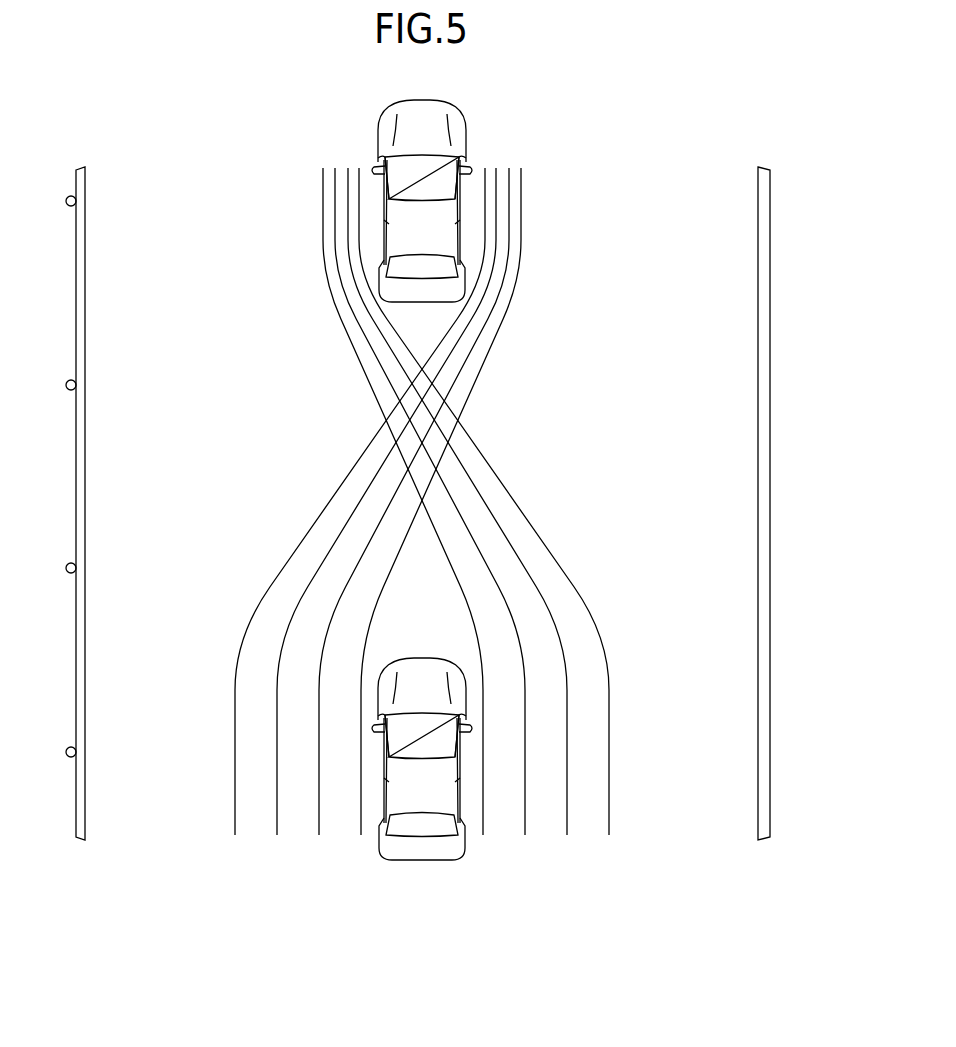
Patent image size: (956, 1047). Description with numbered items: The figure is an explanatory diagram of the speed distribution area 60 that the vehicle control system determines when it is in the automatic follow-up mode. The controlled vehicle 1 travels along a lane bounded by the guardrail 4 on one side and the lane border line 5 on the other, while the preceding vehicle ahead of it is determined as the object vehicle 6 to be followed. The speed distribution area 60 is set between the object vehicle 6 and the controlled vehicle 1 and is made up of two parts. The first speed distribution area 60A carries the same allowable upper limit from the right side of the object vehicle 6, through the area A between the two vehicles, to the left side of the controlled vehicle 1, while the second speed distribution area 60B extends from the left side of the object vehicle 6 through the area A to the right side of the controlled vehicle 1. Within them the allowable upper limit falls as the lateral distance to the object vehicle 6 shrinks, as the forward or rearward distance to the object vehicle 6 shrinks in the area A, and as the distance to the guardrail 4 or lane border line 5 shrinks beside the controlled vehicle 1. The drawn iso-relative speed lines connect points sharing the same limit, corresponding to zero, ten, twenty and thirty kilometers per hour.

The controlled vehicle 1 is at (422, 860).
The guardrail 4 is at (76, 318).
The lane border line 5 is at (770, 400).
The object vehicle 6 is at (422, 300).
The speed distribution area 60 is at (428, 528).
The first speed distribution area 60A is at (363, 528).
The second speed distribution area 60B is at (487, 528).
The area between the controlled vehicle and the object vehicle A is at (445, 582).